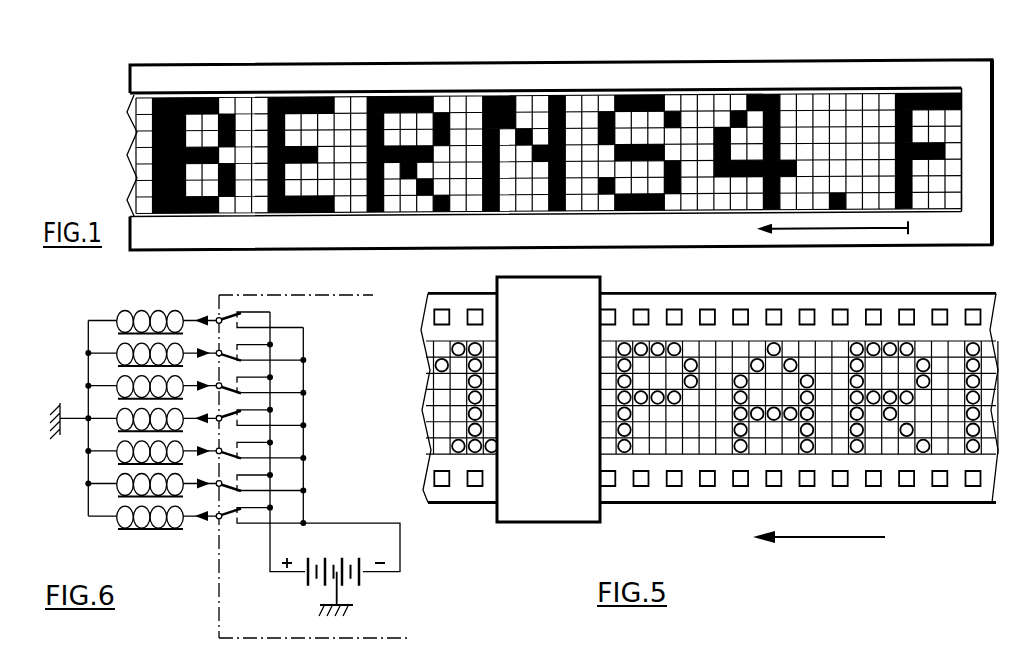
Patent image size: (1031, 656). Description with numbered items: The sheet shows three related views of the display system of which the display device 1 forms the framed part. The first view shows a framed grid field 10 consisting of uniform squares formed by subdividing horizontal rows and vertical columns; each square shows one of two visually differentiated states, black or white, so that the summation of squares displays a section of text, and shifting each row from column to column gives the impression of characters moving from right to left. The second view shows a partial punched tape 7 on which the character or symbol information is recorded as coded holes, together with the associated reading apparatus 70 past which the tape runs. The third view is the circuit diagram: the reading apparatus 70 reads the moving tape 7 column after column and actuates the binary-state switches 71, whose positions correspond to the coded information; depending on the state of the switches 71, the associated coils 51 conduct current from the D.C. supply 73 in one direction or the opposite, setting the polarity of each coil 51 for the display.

In FIG. 1, the display device 1 is at (537, 136).
In FIG. 1, the grid field 10 is at (127, 97).
In FIG. 5, the punched tape 7 is at (651, 497).
In FIG. 5, the reading apparatus 70 is at (545, 505).
In FIG. 6, the coils 51 is at (144, 530).
In FIG. 6, the switches 71 is at (233, 519).
In FIG. 6, the D.C. supply 73 is at (363, 573).